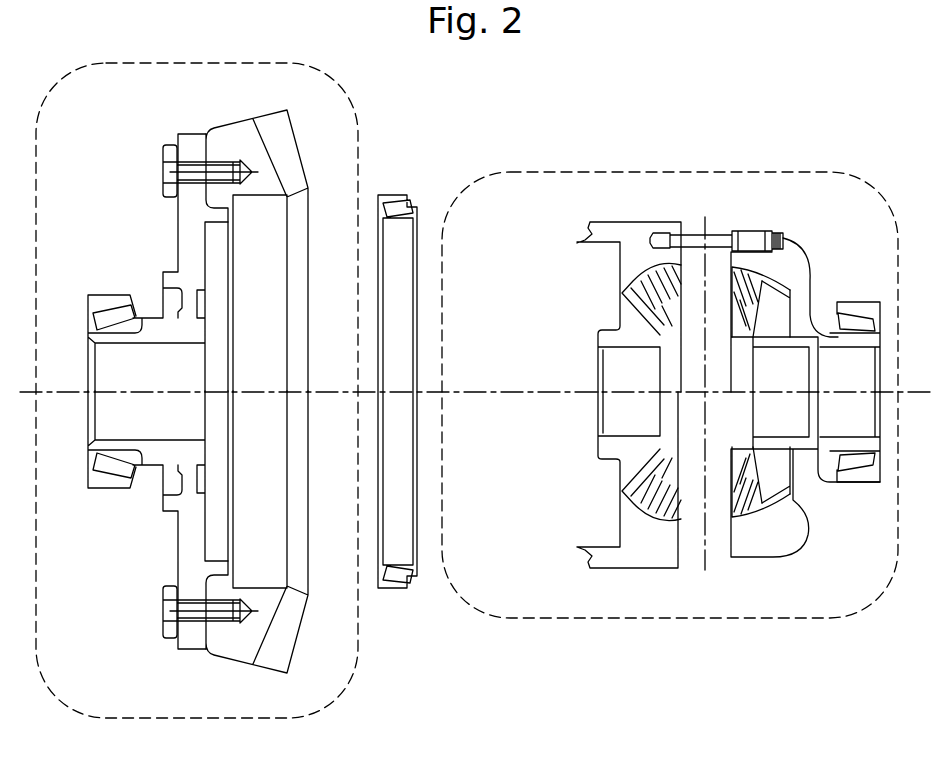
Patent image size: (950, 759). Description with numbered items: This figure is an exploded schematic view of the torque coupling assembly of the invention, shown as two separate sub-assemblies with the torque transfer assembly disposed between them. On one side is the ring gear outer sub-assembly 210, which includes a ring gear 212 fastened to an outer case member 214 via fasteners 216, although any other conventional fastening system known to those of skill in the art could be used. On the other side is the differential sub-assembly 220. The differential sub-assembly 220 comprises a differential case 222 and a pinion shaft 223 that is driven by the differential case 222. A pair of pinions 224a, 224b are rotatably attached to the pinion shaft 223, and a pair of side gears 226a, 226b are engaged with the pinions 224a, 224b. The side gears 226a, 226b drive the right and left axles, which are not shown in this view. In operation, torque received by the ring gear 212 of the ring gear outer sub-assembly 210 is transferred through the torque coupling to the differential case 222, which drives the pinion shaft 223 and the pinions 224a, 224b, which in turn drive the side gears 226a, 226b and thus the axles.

The ring gear outer sub-assembly 210 is at (131, 690).
The ring gear 212 is at (230, 128).
The outer case member 214 is at (187, 225).
The fasteners 216 is at (160, 165).
The differential sub-assembly 220 is at (852, 591).
The differential case 222 is at (612, 230).
The pinion shaft 223 is at (717, 260).
The pinion 224a is at (753, 287).
The pinion 224b is at (743, 508).
The side gear 226a is at (632, 460).
The side gear 226b is at (783, 320).